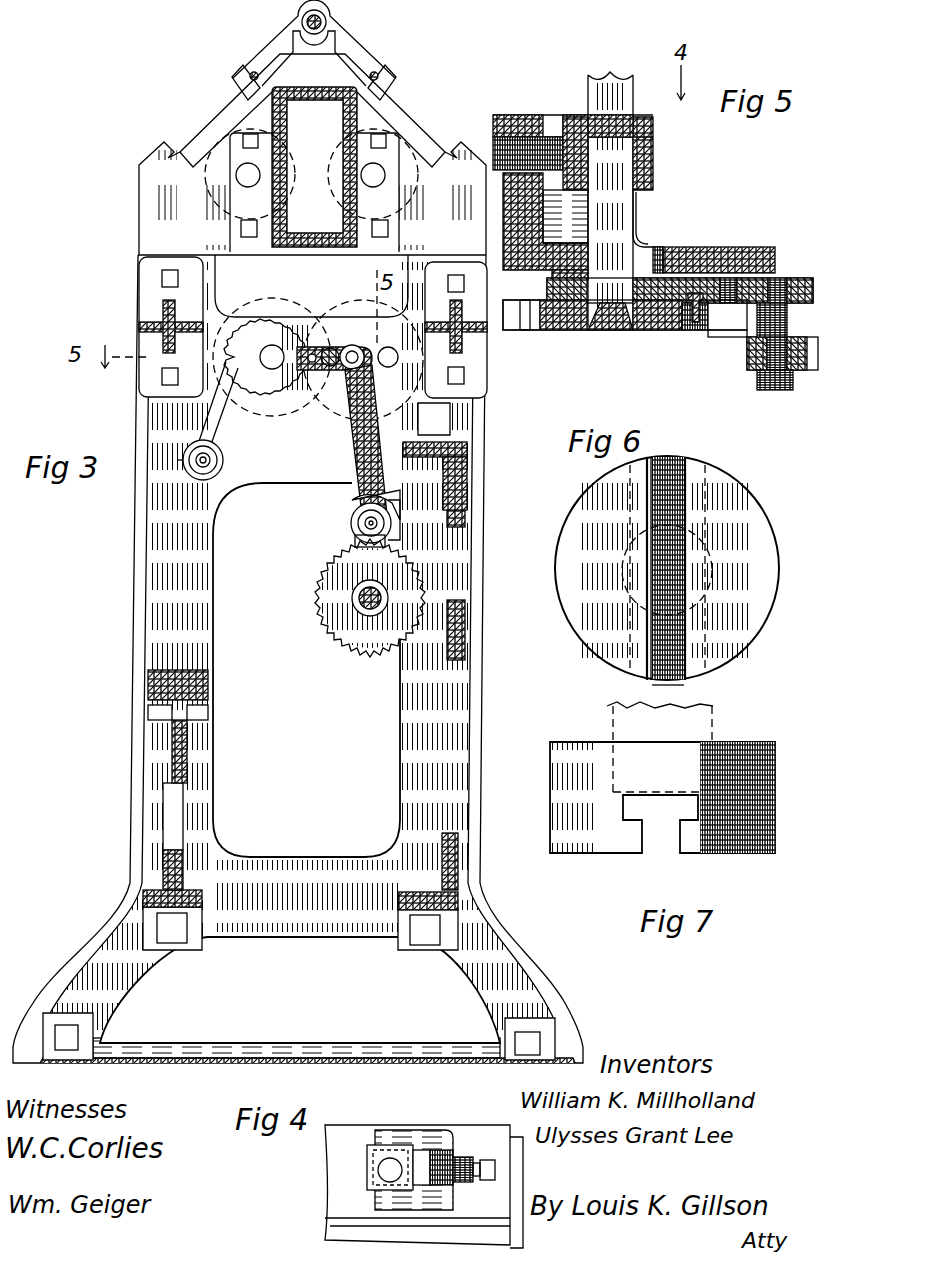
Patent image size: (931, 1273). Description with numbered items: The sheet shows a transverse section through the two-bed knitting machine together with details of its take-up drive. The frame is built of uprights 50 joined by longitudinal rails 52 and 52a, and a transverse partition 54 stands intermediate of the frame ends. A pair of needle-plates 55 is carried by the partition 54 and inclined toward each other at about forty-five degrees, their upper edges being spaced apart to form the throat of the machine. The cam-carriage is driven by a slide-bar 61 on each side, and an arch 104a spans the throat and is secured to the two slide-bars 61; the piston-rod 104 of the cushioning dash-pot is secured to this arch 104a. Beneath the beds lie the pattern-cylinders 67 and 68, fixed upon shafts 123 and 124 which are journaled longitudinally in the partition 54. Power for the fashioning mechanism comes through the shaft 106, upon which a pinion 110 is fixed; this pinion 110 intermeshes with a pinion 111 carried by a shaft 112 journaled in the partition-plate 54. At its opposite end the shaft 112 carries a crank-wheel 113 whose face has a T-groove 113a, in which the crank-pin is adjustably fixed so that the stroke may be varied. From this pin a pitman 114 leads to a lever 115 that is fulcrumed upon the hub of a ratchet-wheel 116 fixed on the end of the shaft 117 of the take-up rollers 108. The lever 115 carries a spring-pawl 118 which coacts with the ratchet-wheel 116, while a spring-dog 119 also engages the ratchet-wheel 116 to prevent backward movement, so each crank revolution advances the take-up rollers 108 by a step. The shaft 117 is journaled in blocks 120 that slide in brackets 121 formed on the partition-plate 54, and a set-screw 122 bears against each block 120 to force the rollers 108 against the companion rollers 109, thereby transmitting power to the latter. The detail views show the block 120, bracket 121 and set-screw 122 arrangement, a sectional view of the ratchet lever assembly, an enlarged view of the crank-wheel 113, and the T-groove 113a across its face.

In FIG. 3, the uprights 50 is at (135, 720).
In FIG. 3, the longitudinal rails 52 is at (450, 462).
In FIG. 3, the longitudinal rail 52a is at (310, 150).
In FIG. 3, the transverse partition 54 is at (258, 495).
In FIG. 5, the transverse partition 54 is at (728, 240).
In FIG. 4, the transverse partition 54 is at (330, 1205).
In FIG. 3, the needle-plates 55 is at (195, 150).
In FIG. 3, the slide-bar 61 is at (250, 72).
In FIG. 3, the pattern-cylinder 67 is at (208, 185).
In FIG. 3, the pattern-cylinder 68 is at (412, 185).
In FIG. 3, the piston-rod 104 is at (330, 16).
In FIG. 3, the arch 104a is at (372, 48).
In FIG. 3, the shaft 106 is at (368, 605).
In FIG. 3, the take-up roller 108 is at (310, 335).
In FIG. 3, the take-up roller 109 is at (363, 351).
In FIG. 3, the pinion 110 is at (335, 615).
In FIG. 3, the pinion 111 is at (355, 518).
In FIG. 3, the shaft 112 is at (380, 508).
In FIG. 6, the shaft 112 is at (620, 553).
In FIG. 7, the shaft 112 is at (607, 706).
In FIG. 3, the crank-wheel 113 is at (392, 522).
In FIG. 6, the crank-wheel 113 is at (560, 558).
In FIG. 6, the T-groove 113a is at (682, 680).
In FIG. 7, the T-groove 113a is at (677, 807).
In FIG. 3, the pitman 114 is at (365, 445).
In FIG. 5, the pitman 114 is at (748, 365).
In FIG. 3, the lever 115 is at (358, 370).
In FIG. 5, the lever 115 is at (797, 278).
In FIG. 3, the ratchet-wheel 116 is at (312, 365).
In FIG. 5, the ratchet-wheel 116 is at (655, 322).
In FIG. 3, the shaft 117 is at (273, 370).
In FIG. 5, the shaft 117 is at (617, 100).
In FIG. 4, the shaft 117 is at (385, 1168).
In FIG. 3, the spring-pawl 118 is at (325, 375).
In FIG. 5, the spring-pawl 118 is at (697, 322).
In FIG. 3, the spring-dog 119 is at (222, 450).
In FIG. 5, the spring-dog 119 is at (523, 332).
In FIG. 5, the blocks 120 is at (655, 162).
In FIG. 4, the blocks 120 is at (390, 1150).
In FIG. 5, the brackets 121 is at (640, 195).
In FIG. 4, the brackets 121 is at (437, 1133).
In FIG. 5, the set-screw 122 is at (523, 167).
In FIG. 4, the set-screw 122 is at (490, 1158).
In FIG. 3, the shaft 123 is at (255, 180).
In FIG. 3, the shaft 124 is at (380, 177).